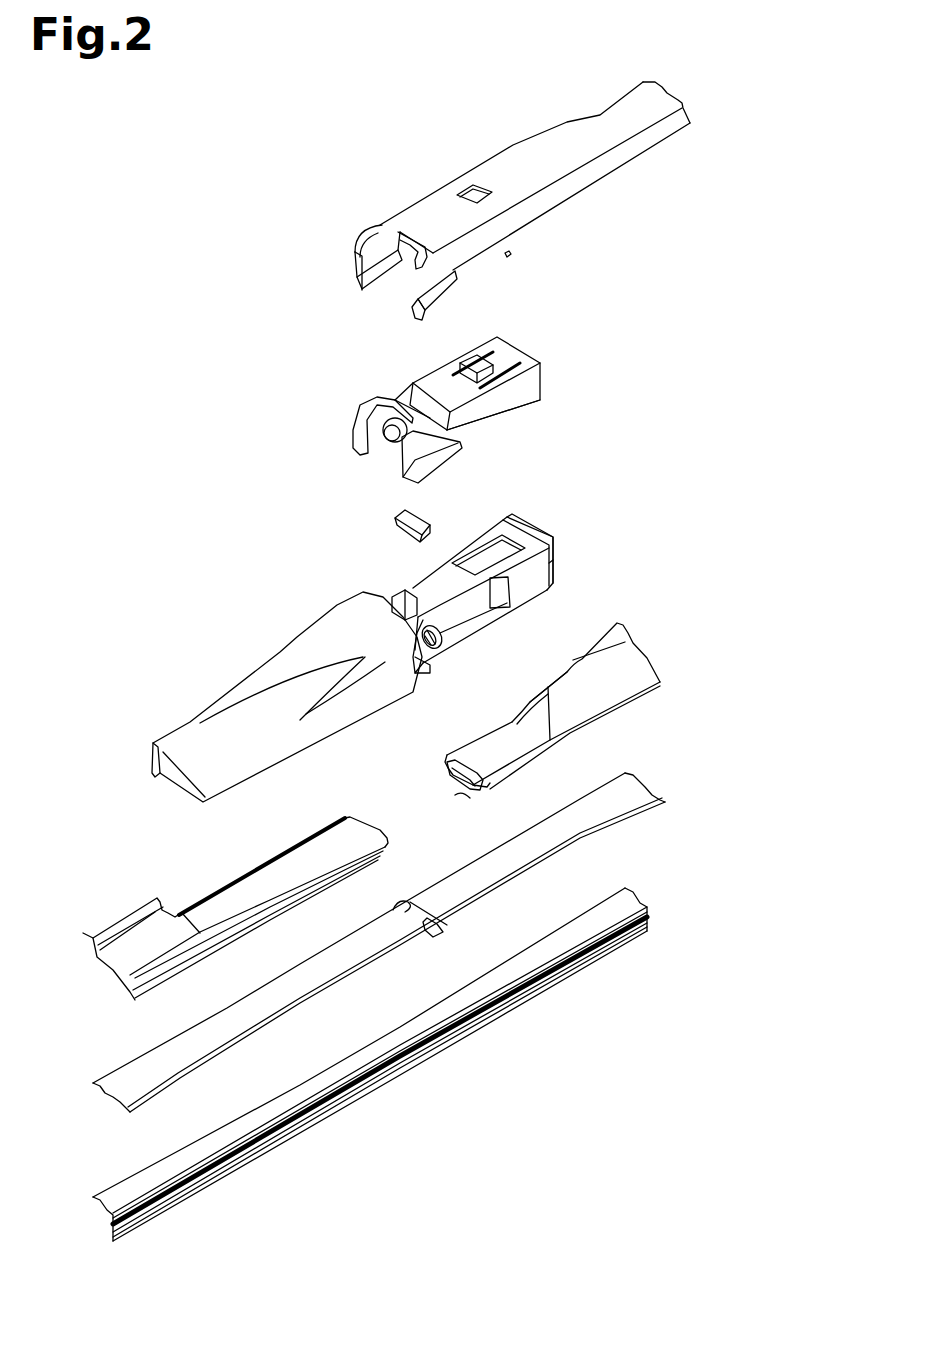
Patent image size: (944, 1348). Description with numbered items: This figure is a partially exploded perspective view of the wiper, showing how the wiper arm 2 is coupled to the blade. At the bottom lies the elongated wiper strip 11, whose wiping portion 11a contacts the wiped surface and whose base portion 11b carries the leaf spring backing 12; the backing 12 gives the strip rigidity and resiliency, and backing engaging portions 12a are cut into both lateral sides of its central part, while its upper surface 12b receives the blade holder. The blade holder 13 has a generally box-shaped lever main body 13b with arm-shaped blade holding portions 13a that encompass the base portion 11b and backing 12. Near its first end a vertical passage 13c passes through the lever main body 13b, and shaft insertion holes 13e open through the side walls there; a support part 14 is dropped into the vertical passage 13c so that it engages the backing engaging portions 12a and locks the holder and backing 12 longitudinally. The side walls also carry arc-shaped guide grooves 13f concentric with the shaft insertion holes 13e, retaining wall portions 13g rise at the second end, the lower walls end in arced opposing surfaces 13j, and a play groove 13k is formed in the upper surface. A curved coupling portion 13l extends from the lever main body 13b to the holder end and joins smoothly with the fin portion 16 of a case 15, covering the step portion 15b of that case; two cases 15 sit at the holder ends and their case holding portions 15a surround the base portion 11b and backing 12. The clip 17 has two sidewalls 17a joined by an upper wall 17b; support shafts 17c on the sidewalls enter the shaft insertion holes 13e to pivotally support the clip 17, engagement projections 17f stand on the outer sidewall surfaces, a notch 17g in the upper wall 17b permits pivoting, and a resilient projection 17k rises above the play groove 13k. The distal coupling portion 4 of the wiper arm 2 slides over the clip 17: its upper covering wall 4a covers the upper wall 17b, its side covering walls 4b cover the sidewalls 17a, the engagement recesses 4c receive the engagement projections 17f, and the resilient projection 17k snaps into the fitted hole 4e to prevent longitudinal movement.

The wiper arm 2 is at (633, 160).
The distal coupling portion 4 is at (500, 152).
The upper covering wall 4a is at (428, 207).
The side covering wall 4b is at (395, 273).
The engagement recess 4c is at (362, 267).
The fitted hole 4e is at (487, 188).
The wiper strip 11 is at (273, 1100).
The wiping portion 11a is at (310, 1130).
The base portion 11b is at (217, 1140).
The backing 12 is at (313, 1000).
The backing engaging portion 12a is at (437, 930).
The upper surface 12b is at (337, 957).
The blade holder 13 is at (337, 605).
The blade holding portion 13a is at (485, 647).
The lever main body 13b is at (448, 570).
The vertical passage 13c is at (420, 588).
The shaft insertion hole 13e is at (440, 643).
The guide groove 13f is at (517, 593).
The retaining wall portion 13g is at (553, 568).
The opposing surface 13j is at (430, 673).
The play groove 13k is at (507, 552).
The curved coupling portion 13l is at (257, 703).
The support part 14 is at (397, 530).
The case 15 is at (557, 750).
The case holding portion 15a is at (457, 780).
The step portion 15b is at (257, 880).
The fin portion 16 is at (597, 670).
The clip 17 is at (543, 382).
The sidewall 17a is at (395, 400).
The upper wall 17b is at (433, 380).
The support shaft 17c is at (397, 437).
The engagement projection 17f is at (360, 420).
The notch 17g is at (413, 390).
The resilient projection 17k is at (470, 357).